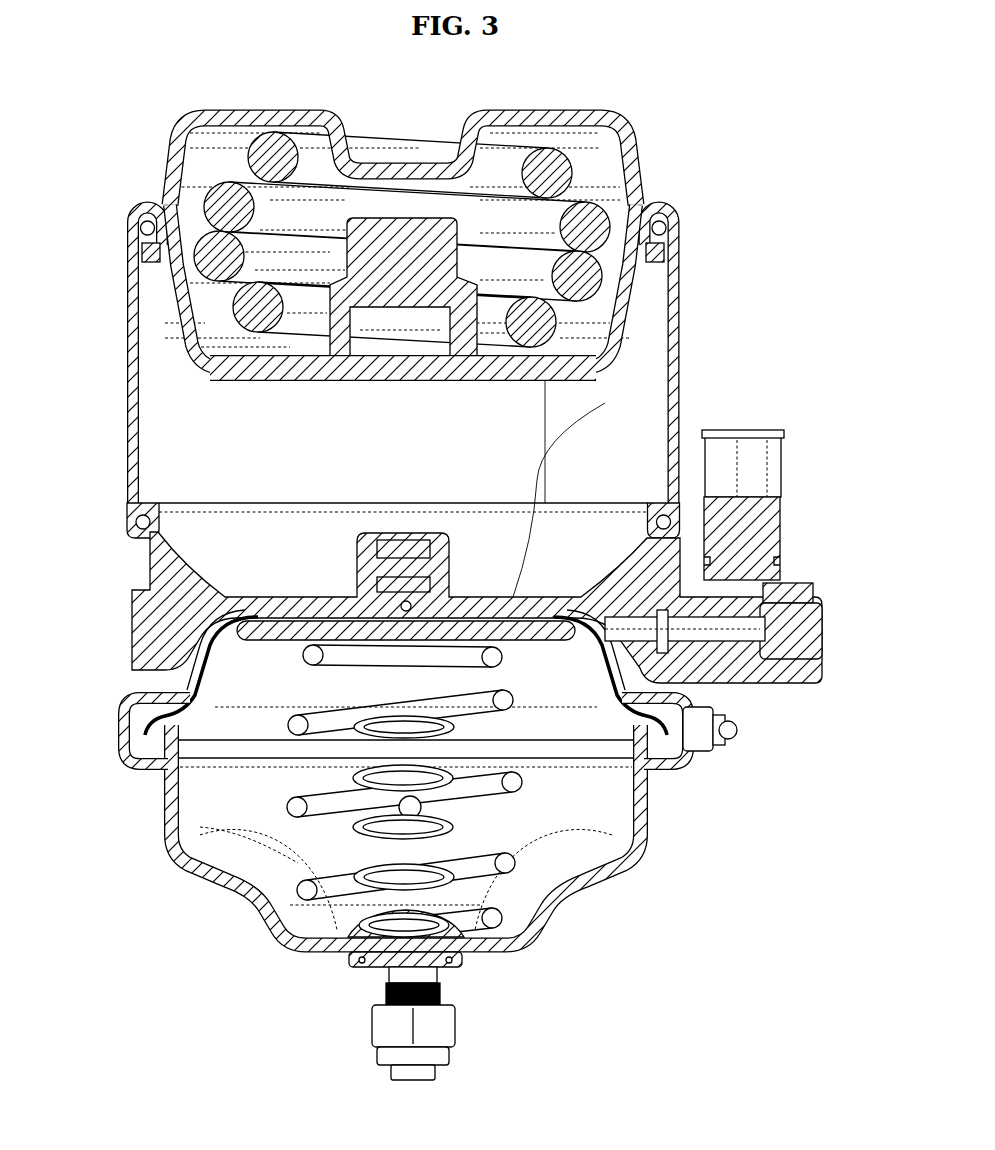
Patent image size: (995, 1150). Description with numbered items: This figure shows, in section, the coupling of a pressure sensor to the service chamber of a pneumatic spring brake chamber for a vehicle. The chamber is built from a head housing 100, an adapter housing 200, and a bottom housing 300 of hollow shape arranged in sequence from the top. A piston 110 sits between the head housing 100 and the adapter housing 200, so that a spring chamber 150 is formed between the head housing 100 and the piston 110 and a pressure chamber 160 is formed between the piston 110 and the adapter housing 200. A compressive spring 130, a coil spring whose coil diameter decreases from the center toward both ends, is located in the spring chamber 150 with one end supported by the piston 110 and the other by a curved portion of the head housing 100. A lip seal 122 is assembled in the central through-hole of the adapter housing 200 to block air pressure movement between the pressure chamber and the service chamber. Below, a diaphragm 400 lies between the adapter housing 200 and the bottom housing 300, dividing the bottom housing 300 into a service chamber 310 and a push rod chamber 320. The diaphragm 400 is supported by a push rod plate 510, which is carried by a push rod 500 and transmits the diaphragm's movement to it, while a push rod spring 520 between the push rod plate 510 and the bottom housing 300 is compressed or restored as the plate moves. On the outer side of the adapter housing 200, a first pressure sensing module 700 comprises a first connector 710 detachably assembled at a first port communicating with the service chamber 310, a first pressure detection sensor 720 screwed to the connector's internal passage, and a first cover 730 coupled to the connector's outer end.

The head housing 100 is at (426, 357).
The piston 110 is at (195, 348).
The lip seal 122 is at (375, 565).
The compressive spring 130 is at (167, 293).
The spring chamber 150 is at (193, 172).
The pressure chamber 160 is at (605, 403).
The adapter housing 200 is at (427, 607).
The bottom housing 300 is at (385, 876).
The service chamber 310 is at (167, 673).
The push rod chamber 320 is at (228, 805).
The diaphragm 400 is at (650, 817).
The push rod 500 is at (414, 805).
The push rod plate 510 is at (703, 684).
The push rod spring 520 is at (615, 868).
The first pressure sensing module 700 is at (749, 544).
The first connector 710 is at (810, 583).
The first pressure detection sensor 720 is at (778, 497).
The first cover 730 is at (803, 633).